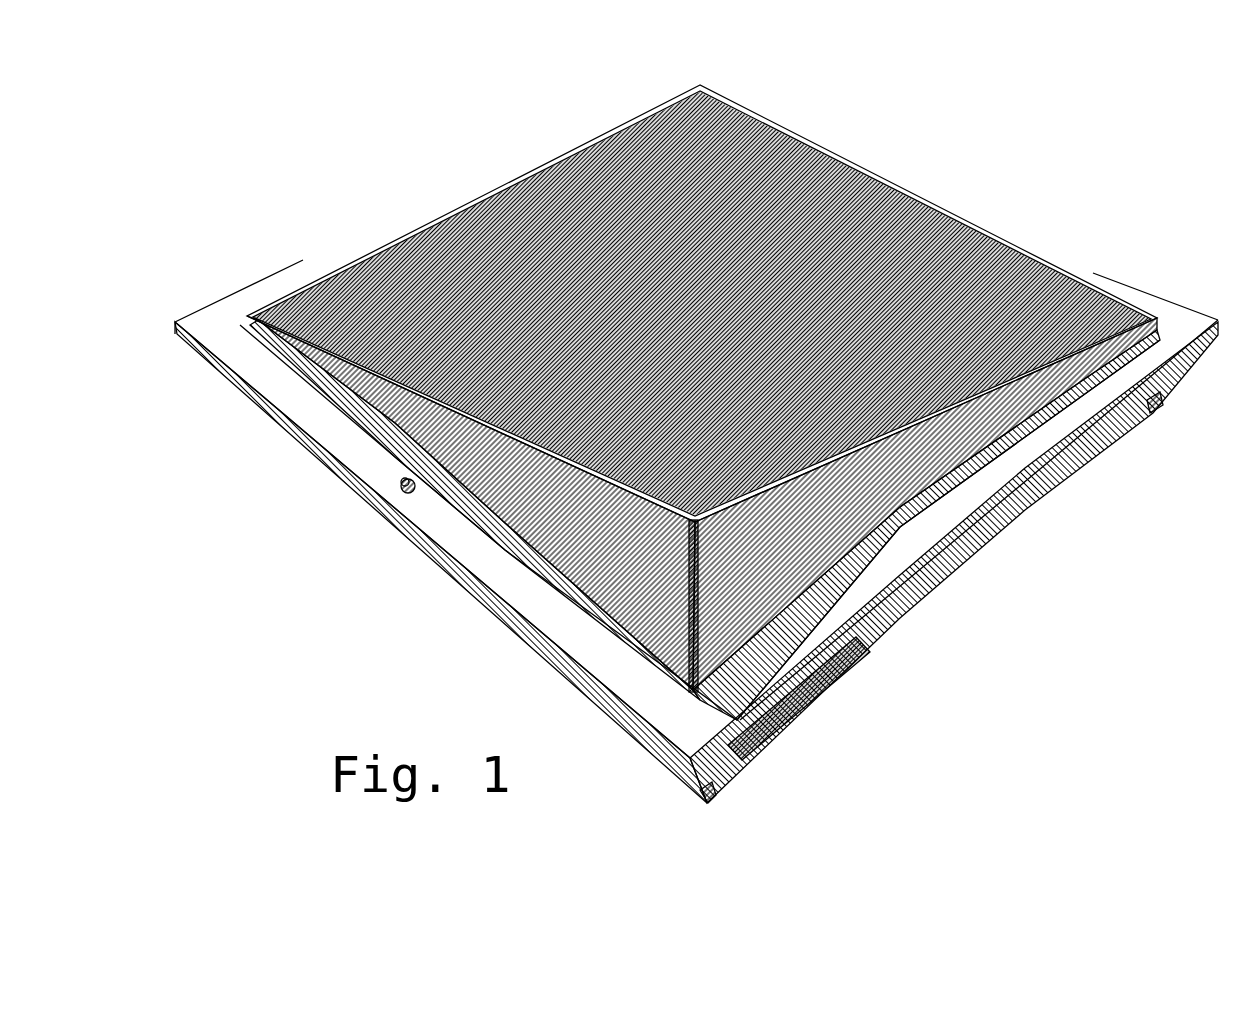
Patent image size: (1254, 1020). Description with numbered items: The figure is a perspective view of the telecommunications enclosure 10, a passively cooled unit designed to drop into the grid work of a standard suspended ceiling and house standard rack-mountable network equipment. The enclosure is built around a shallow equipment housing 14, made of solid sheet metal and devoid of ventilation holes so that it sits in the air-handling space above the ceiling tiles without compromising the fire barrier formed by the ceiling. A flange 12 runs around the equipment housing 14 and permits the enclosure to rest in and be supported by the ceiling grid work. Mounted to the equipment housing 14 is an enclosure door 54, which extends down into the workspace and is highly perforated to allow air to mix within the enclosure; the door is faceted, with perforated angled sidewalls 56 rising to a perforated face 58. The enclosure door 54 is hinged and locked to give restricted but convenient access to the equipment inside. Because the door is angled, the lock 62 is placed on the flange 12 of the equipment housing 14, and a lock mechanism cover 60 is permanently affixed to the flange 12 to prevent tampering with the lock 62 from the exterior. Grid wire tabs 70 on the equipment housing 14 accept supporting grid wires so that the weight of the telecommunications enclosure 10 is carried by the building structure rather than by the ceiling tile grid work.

The telecommunications enclosure 10 is at (1130, 163).
The flange 12 is at (240, 300).
The equipment housing 14 is at (1000, 522).
The enclosure door 54 is at (530, 165).
The perforated angled sidewalls 56 is at (1008, 210).
The perforated face 58 is at (718, 228).
The lock mechanism cover 60 is at (425, 550).
The lock 62 is at (400, 481).
The grid wire tabs 70 is at (1162, 400).